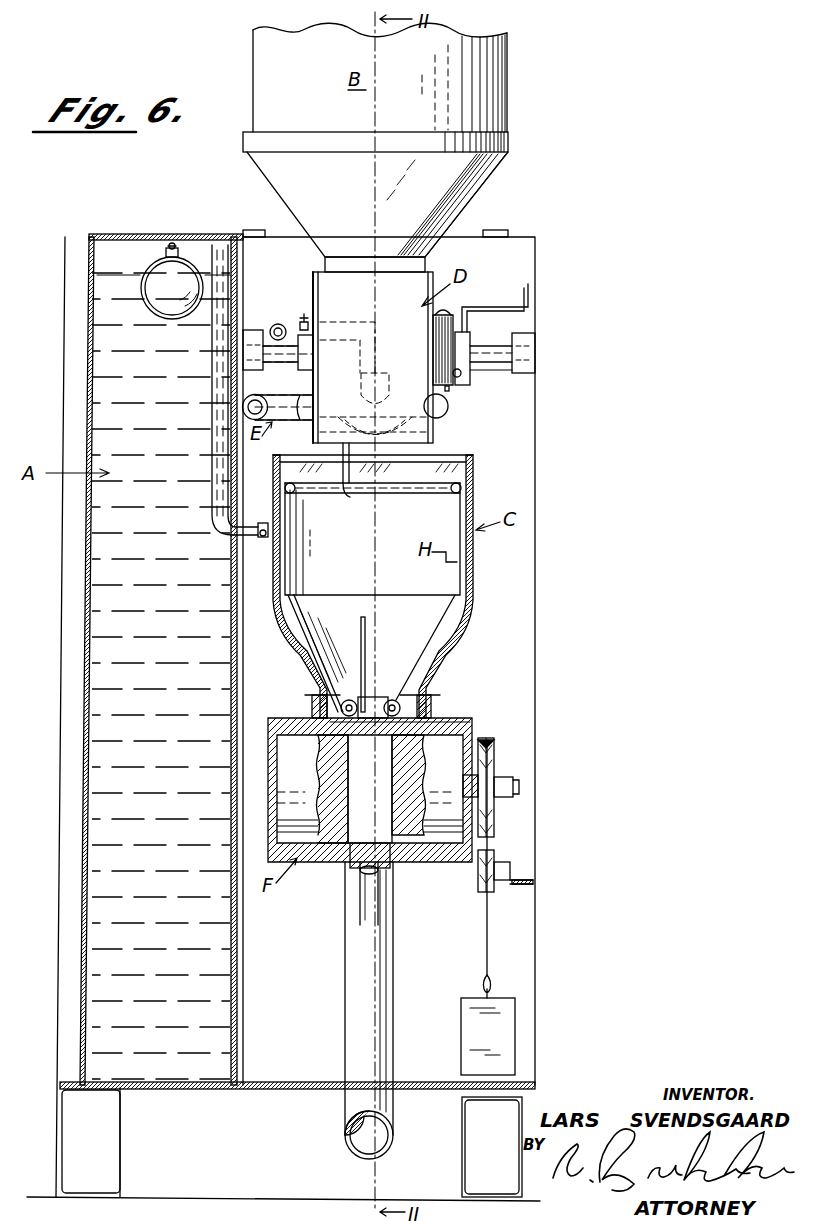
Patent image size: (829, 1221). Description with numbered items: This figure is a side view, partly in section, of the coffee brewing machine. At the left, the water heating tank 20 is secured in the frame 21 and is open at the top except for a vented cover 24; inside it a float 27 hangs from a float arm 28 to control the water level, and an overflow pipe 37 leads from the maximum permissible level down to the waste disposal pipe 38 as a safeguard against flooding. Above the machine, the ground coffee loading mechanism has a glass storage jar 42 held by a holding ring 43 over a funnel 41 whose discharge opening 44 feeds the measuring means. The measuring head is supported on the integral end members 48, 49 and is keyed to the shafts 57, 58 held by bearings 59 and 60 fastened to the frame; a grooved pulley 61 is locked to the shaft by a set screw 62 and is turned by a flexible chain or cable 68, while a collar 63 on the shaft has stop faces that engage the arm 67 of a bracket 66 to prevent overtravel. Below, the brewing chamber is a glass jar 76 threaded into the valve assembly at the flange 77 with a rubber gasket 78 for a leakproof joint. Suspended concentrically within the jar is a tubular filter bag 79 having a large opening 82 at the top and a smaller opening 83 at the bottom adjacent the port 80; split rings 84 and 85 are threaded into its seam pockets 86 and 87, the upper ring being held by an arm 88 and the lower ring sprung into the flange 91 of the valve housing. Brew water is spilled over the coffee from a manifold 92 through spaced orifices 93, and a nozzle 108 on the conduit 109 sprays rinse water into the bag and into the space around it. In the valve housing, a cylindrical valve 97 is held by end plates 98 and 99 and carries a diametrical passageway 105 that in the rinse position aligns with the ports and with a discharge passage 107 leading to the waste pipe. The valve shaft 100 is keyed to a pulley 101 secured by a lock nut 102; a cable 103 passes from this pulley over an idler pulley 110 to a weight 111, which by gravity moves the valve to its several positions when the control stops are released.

The water heating tank 20 is at (85, 575).
The frame 21 is at (140, 1092).
The vented cover 24 is at (160, 237).
The float 27 is at (183, 298).
The float arm 28 is at (176, 250).
The overflow pipe 37 is at (225, 300).
The waste disposal pipe 38 is at (353, 996).
The funnel 41 is at (455, 200).
The glass storage jar 42 is at (500, 100).
The holding ring 43 is at (509, 149).
The discharge opening 44 is at (408, 267).
The end member 48 is at (433, 291).
The end member 49 is at (313, 288).
The shaft 57 is at (484, 372).
The shaft 58 is at (288, 365).
The bearing 59 is at (528, 357).
The bearing 60 is at (254, 330).
The grooved pulley 61 is at (449, 390).
The set screw 62 is at (490, 348).
The collar 63 is at (459, 371).
The bracket 66 is at (505, 307).
The arm 67 is at (438, 326).
The flexible chain or cable 68 is at (440, 335).
The glass jar 76 is at (473, 480).
The flange 77 is at (312, 705).
The rubber gasket 78 is at (306, 764).
The filter bag 79 is at (462, 612).
The port 80 is at (372, 697).
The large opening 82 is at (392, 495).
The smaller opening 83 is at (399, 709).
The upper ring 84 is at (460, 489).
The lower ring 85 is at (367, 632).
The seam pocket 86 is at (345, 497).
The seam pocket 87 is at (440, 727).
The arm 88 is at (343, 460).
The flange 91 is at (320, 708).
The manifold 92 is at (445, 414).
The orifices 93 is at (375, 430).
The cylindrical valve 97 is at (454, 766).
The valve housing end plate 98 is at (545, 712).
The valve housing end plate 99 is at (268, 718).
The valve shaft 100 is at (494, 772).
The pulley 101 is at (496, 750).
The lock nut 102 is at (515, 780).
The flexible chain or cable 103 is at (490, 742).
The diametrical passageway 105 is at (388, 804).
The discharge passage 107 is at (350, 858).
The nozzle 108 is at (382, 400).
The conduit 109 is at (282, 326).
The idler pulley 110 is at (478, 880).
The weight 111 is at (506, 1040).